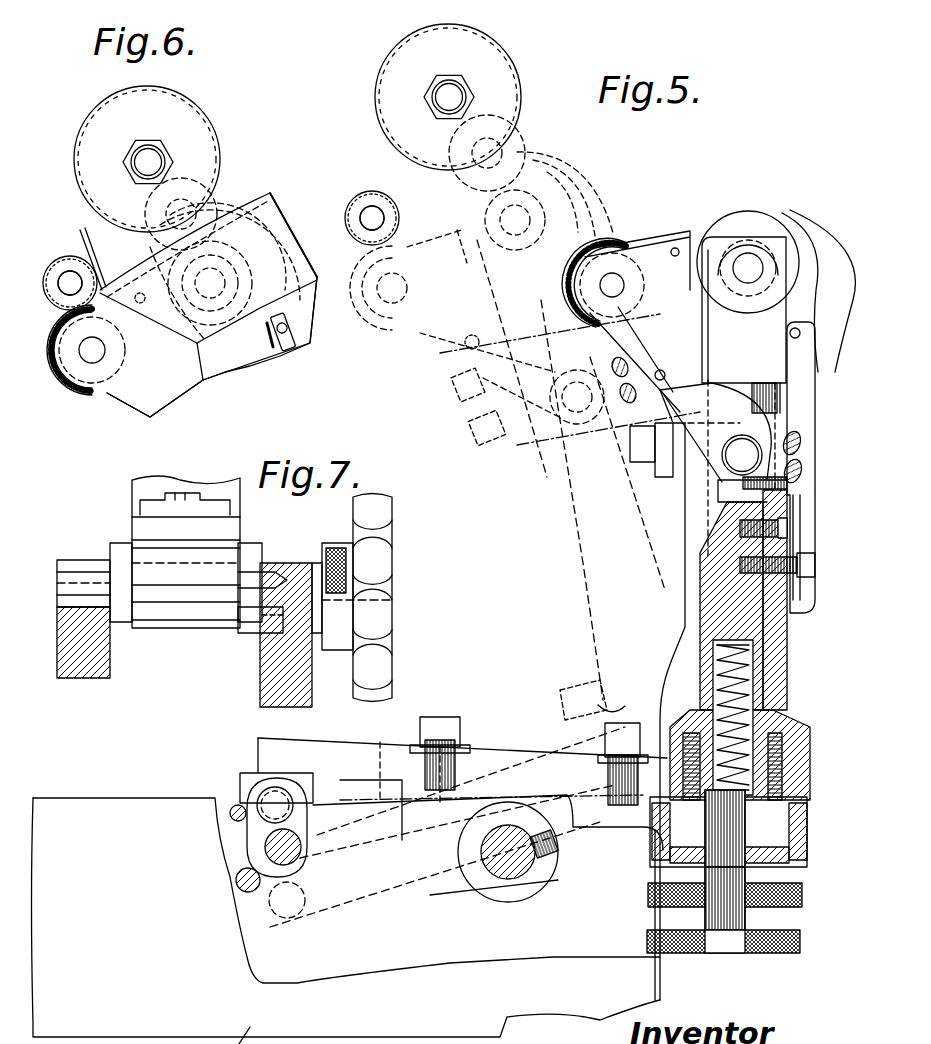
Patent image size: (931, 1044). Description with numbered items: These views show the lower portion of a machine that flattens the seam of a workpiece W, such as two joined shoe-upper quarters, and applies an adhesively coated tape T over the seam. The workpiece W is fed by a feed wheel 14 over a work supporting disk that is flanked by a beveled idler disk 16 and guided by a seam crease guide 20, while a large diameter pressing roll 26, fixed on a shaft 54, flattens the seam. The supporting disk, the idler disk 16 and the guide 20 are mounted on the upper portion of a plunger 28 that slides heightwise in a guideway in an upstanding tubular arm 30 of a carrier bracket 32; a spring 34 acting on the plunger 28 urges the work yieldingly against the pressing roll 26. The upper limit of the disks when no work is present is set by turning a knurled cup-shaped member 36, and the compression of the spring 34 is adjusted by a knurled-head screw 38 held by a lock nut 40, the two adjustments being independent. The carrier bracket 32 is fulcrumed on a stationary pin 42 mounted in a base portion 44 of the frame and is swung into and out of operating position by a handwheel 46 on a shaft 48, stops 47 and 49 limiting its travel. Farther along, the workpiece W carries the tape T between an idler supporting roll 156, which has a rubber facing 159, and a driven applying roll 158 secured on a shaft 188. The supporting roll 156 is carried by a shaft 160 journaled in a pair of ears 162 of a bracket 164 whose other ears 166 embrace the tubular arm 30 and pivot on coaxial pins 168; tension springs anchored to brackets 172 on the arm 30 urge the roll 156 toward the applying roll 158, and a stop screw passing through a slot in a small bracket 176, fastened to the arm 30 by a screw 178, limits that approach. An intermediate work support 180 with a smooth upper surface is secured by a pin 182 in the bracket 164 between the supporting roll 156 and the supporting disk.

In FIG. 6, the feed wheel 14 is at (196, 217).
In FIG. 5, the idler disk 16 is at (742, 211).
In FIG. 6, the seam crease guide 20 is at (300, 332).
In FIG. 5, the seam crease guide 20 is at (786, 214).
In FIG. 6, the pressing roll 26 is at (205, 121).
In FIG. 5, the pressing roll 26 is at (500, 58).
In FIG. 6, the plunger 28 is at (230, 362).
In FIG. 5, the plunger 28 is at (765, 404).
In FIG. 5, the tubular arm 30 is at (690, 583).
In FIG. 7, the tubular arm 30 is at (135, 490).
In FIG. 5, the carrier bracket 32 is at (340, 742).
In FIG. 7, the carrier bracket 32 is at (137, 533).
In FIG. 5, the spring 34 is at (745, 668).
In FIG. 5, the cup-shaped member 36 is at (805, 832).
In FIG. 5, the screw 38 is at (800, 937).
In FIG. 5, the lock nut 40 is at (822, 884).
In FIG. 5, the stationary pin 42 is at (518, 868).
In FIG. 7, the base portion 44 is at (262, 675).
In FIG. 7, the handwheel 46 is at (380, 603).
In FIG. 5, the stop 47 is at (232, 811).
In FIG. 7, the stop 47 is at (268, 577).
In FIG. 5, the shaft 48 is at (270, 842).
In FIG. 7, the shaft 48 is at (77, 583).
In FIG. 5, the stop 49 is at (237, 883).
In FIG. 7, the stop 49 is at (242, 632).
In FIG. 6, the shaft 54 is at (141, 156).
In FIG. 5, the shaft 54 is at (459, 94).
In FIG. 6, the supporting roll 156 is at (68, 368).
In FIG. 5, the supporting roll 156 is at (614, 243).
In FIG. 6, the applying roll 158 is at (69, 262).
In FIG. 5, the applying roll 158 is at (364, 200).
In FIG. 6, the rubber facing 159 is at (76, 385).
In FIG. 5, the rubber facing 159 is at (628, 252).
In FIG. 6, the shaft 160 is at (92, 364).
In FIG. 5, the shaft 160 is at (620, 286).
In FIG. 6, the ears 162 is at (137, 403).
In FIG. 5, the ears 162 is at (590, 288).
In FIG. 5, the bracket 164 is at (690, 342).
In FIG. 5, the ears 166 is at (660, 473).
In FIG. 5, the coaxial pins 168 is at (732, 466).
In FIG. 5, the brackets 172 is at (797, 336).
In FIG. 5, the small bracket 176 is at (655, 468).
In FIG. 5, the screw 178 is at (631, 452).
In FIG. 5, the intermediate work support 180 is at (677, 237).
In FIG. 5, the pin 182 is at (675, 257).
In FIG. 6, the shaft 188 is at (67, 286).
In FIG. 5, the shaft 188 is at (372, 218).
In FIG. 6, the workpiece W is at (270, 214).
In FIG. 6, the tape T is at (75, 242).